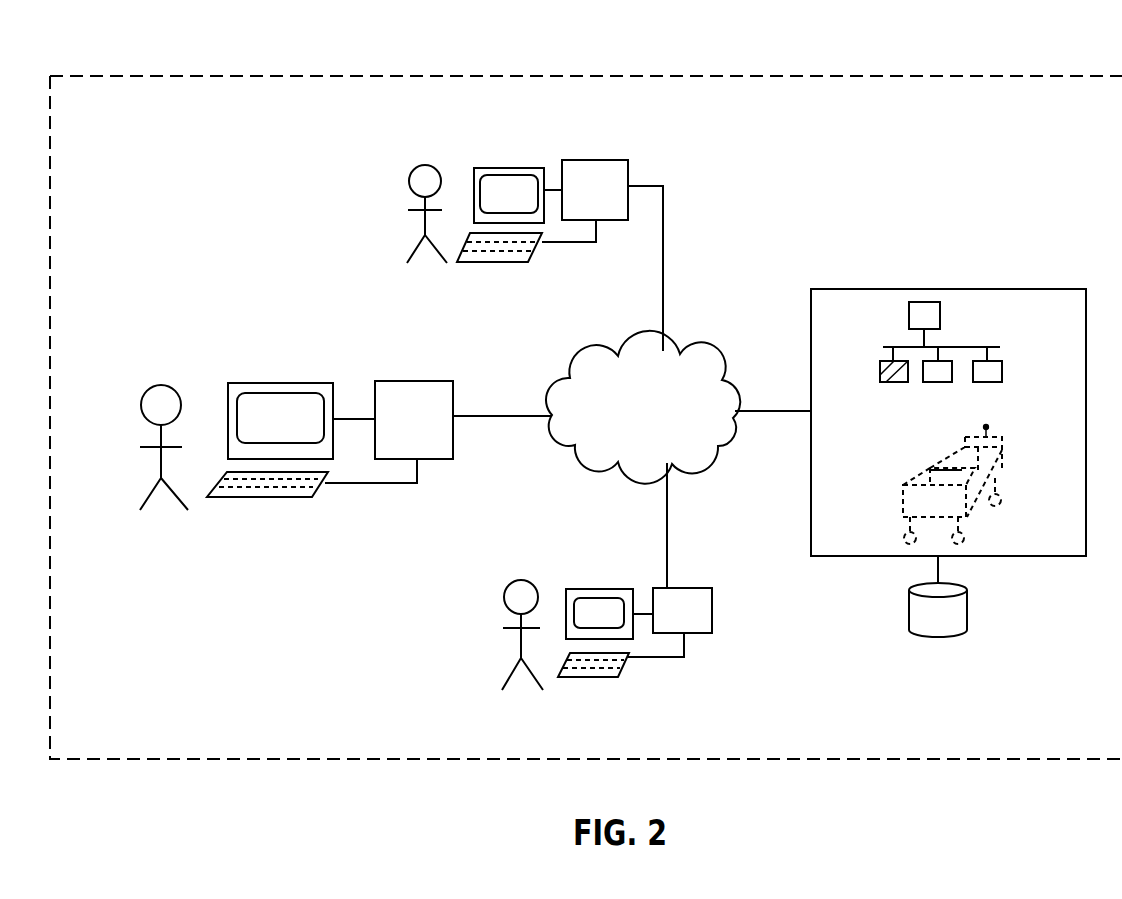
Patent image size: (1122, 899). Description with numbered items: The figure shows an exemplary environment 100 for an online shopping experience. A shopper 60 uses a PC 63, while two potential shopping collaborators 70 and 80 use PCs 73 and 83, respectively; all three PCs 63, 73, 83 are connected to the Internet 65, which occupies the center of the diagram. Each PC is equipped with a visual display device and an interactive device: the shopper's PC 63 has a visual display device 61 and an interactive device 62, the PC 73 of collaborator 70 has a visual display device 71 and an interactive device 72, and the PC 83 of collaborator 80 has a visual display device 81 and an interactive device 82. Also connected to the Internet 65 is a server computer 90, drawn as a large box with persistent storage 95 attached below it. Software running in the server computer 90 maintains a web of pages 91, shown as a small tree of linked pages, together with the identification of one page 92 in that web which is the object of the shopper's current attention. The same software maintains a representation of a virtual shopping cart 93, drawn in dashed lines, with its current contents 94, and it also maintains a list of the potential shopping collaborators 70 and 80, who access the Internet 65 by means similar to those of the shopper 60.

The environment 100 is at (770, 76).
The shopper 60 is at (158, 467).
The visual display device 61 is at (265, 383).
The interactive device 62 is at (252, 497).
The PC 63 is at (420, 381).
The Internet 65 is at (703, 362).
The potential shopping collaborator 70 is at (418, 228).
The visual display device 71 is at (510, 168).
The interactive device 72 is at (503, 262).
The PC 73 is at (628, 163).
The potential shopping collaborator 80 is at (504, 603).
The visual display device 81 is at (595, 589).
The interactive device 82 is at (590, 677).
The PC 83 is at (707, 588).
The server computer 90 is at (901, 289).
The web of pages 91 is at (955, 345).
The page in the web 92 is at (880, 382).
The virtual shopping cart 93 is at (1005, 470).
The current contents 94 is at (930, 469).
The persistent storage 95 is at (967, 608).